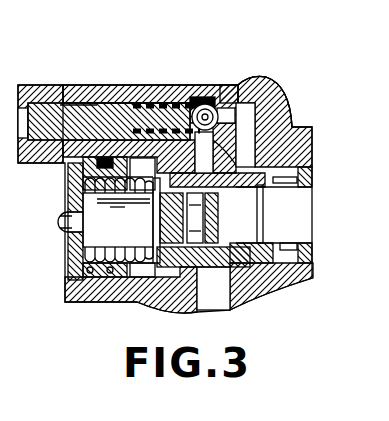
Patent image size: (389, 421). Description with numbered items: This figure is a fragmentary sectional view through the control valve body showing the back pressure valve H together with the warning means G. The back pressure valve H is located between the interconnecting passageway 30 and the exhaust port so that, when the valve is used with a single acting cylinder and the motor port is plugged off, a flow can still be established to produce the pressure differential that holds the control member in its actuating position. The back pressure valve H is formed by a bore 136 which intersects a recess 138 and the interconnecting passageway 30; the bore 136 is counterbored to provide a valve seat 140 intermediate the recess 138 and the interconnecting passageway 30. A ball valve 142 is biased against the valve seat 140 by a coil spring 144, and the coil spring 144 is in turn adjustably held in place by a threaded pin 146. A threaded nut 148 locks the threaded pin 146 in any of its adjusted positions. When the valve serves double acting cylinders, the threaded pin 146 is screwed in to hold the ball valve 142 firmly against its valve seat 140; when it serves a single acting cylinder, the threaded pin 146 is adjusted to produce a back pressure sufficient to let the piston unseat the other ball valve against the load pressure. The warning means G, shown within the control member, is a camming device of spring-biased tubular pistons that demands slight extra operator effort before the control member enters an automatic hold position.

The interconnecting passageway 30 is at (297, 126).
The bore 136 is at (247, 77).
The recess 138 is at (287, 97).
The valve seat 140 is at (207, 104).
The ball valve 142 is at (198, 104).
The coil spring 144 is at (145, 100).
The threaded pin 146 is at (98, 103).
The threaded nut 148 is at (60, 84).
The back pressure valve H is at (229, 100).
The warning means G is at (120, 298).